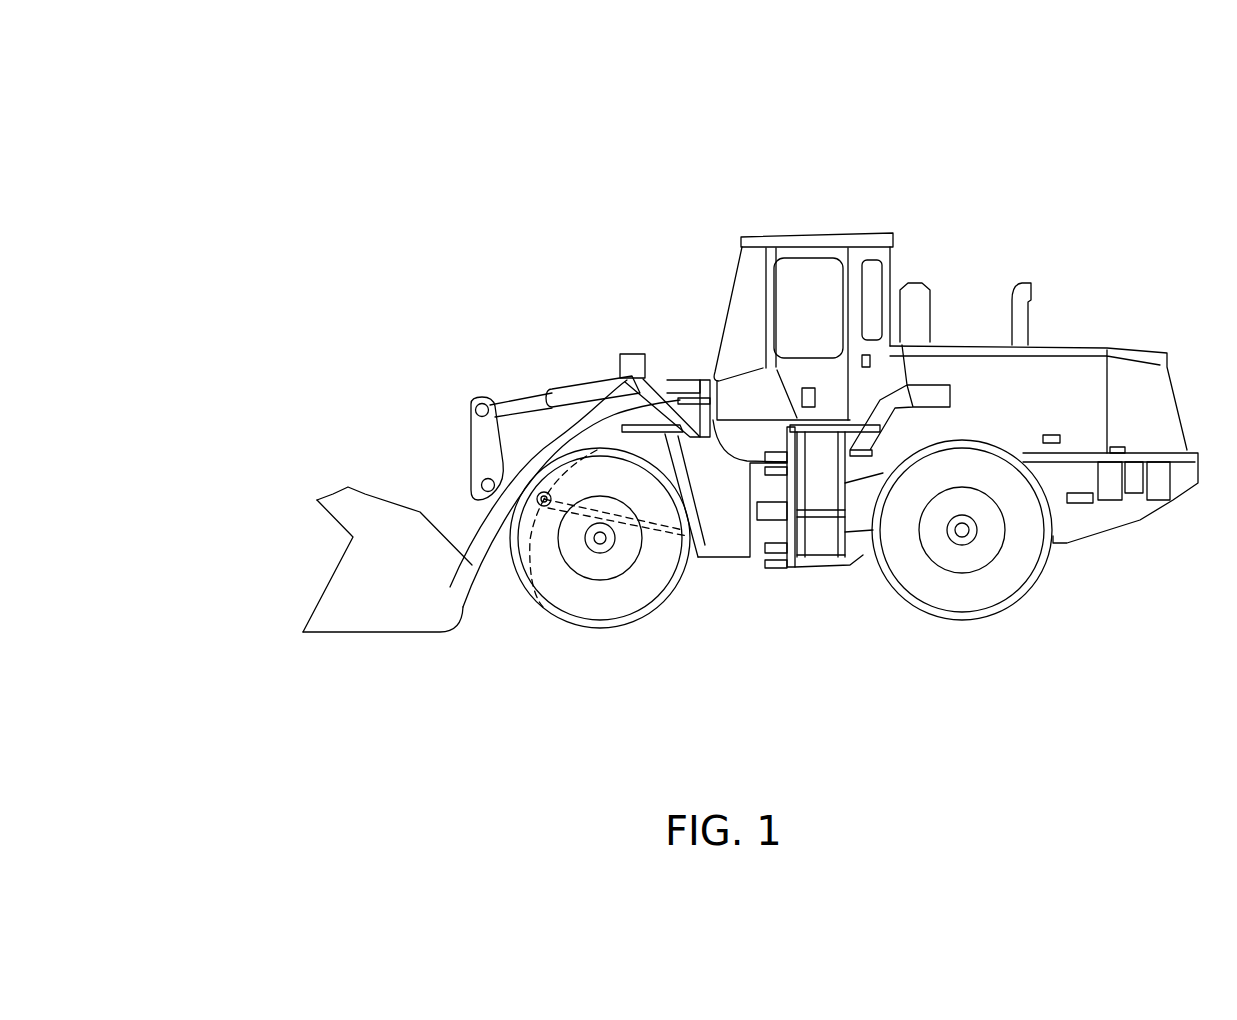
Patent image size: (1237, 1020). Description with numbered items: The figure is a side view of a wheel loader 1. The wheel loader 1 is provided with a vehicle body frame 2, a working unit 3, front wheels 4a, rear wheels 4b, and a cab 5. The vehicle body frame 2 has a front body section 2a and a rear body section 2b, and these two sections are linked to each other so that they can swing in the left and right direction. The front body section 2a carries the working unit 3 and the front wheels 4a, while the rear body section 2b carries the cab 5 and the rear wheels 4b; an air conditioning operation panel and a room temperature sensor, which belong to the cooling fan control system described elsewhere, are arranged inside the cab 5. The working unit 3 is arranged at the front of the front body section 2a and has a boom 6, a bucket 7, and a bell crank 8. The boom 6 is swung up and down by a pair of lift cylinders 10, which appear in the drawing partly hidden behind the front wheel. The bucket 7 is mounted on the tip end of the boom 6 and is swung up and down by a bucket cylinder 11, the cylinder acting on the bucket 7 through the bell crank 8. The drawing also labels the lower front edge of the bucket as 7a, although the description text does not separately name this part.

The wheel loader 1 is at (1112, 128).
The vehicle body frame 2 is at (810, 577).
The front body section 2a is at (730, 545).
The rear body section 2b is at (862, 550).
The working unit 3 is at (285, 570).
The front wheels 4a is at (608, 610).
The rear wheels 4b is at (972, 600).
The cab 5 is at (833, 222).
The boom 6 is at (523, 478).
The bucket 7 is at (353, 498).
The cutting edge 7a is at (375, 640).
The bell crank 8 is at (482, 450).
The lift cylinders 10 is at (543, 607).
The bucket cylinder 11 is at (567, 392).